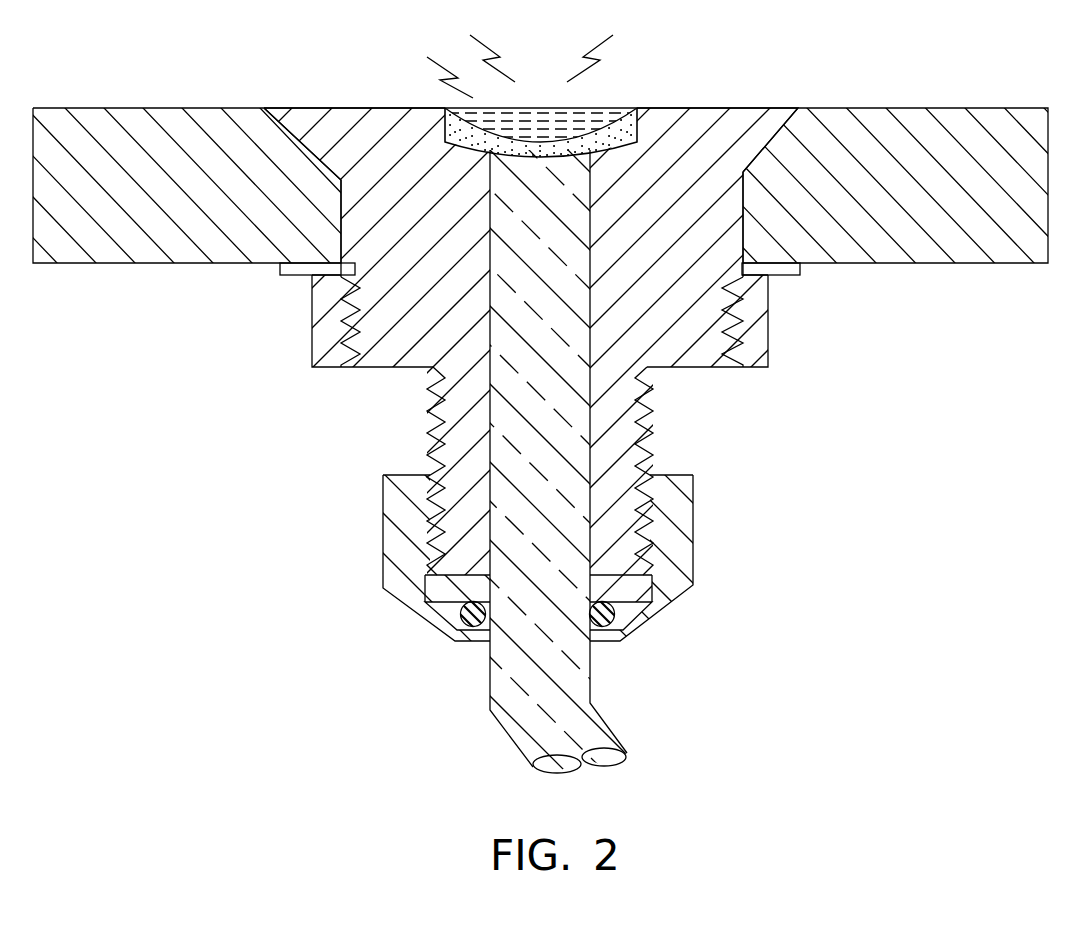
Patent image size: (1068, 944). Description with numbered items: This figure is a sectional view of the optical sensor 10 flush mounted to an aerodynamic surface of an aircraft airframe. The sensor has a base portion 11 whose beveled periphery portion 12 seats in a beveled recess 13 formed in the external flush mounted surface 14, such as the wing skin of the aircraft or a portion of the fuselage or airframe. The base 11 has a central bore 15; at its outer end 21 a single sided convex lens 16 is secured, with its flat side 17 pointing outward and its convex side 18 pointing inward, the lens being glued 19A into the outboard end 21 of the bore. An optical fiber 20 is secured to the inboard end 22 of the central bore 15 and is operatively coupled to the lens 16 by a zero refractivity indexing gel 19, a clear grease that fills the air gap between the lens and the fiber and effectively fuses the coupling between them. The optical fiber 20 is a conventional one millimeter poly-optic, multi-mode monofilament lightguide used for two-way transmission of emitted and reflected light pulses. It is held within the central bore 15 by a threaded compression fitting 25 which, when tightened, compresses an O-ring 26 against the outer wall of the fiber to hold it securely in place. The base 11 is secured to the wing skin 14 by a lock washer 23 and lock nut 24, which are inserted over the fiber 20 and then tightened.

The optical sensor 10 is at (212, 82).
The base portion 11 is at (390, 145).
The beveled periphery portion 12 is at (300, 126).
The beveled recess 13 is at (327, 150).
The external flush mounted surface 14 is at (92, 140).
The central bore 15 is at (490, 337).
The single sided convex lens 16 is at (540, 125).
The flat side 17 is at (593, 145).
The convex side 18 is at (493, 137).
The zero refractivity indexing gel 19 is at (604, 112).
The glue 19A is at (637, 141).
The optical fiber 20 is at (563, 434).
The outer end 21 is at (700, 107).
The inboard end 22 is at (493, 652).
The lock washer 23 is at (296, 278).
The lock nut 24 is at (328, 368).
The threaded compression fitting 25 is at (680, 549).
The O-ring 26 is at (460, 632).